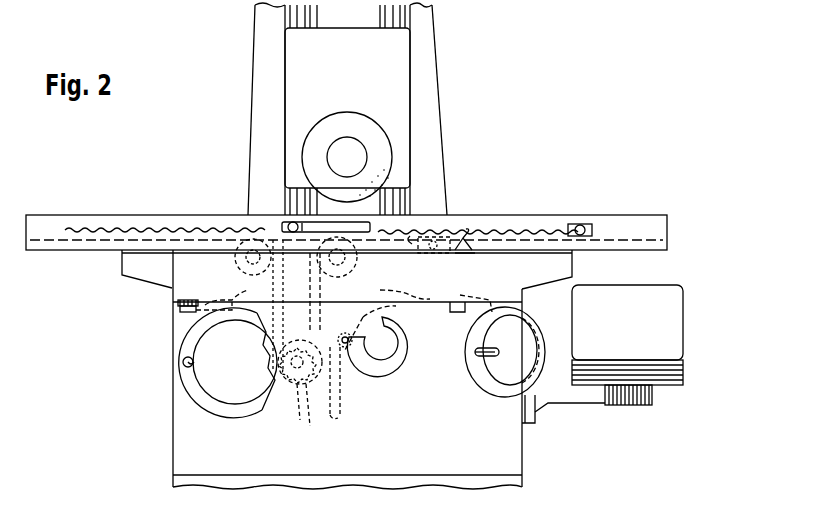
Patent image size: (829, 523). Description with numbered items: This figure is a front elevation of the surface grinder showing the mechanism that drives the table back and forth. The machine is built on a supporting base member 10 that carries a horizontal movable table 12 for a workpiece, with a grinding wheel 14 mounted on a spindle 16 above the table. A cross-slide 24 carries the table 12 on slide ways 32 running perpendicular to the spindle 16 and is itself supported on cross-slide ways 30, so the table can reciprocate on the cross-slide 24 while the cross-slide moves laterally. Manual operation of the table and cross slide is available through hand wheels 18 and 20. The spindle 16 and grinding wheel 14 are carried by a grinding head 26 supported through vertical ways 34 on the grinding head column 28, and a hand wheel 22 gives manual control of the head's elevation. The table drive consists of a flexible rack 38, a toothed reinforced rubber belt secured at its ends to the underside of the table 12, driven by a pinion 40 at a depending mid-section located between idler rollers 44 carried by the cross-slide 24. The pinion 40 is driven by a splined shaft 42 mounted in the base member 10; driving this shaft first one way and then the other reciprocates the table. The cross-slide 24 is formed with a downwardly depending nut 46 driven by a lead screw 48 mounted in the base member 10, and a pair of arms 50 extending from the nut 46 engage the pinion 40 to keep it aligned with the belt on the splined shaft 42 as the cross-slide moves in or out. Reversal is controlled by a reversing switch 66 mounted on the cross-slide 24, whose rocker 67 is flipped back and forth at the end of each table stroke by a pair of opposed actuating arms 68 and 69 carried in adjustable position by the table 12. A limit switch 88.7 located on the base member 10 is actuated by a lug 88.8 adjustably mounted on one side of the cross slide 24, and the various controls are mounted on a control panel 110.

The supporting base member 10 is at (447, 465).
The horizontal movable table 12 is at (47, 215).
The grinding wheel 14 is at (359, 136).
The spindle 16 is at (359, 166).
The hand wheel 18 is at (213, 407).
The hand wheel 20 is at (397, 355).
The hand wheel 22 is at (482, 375).
The cross-slide 24 is at (130, 268).
The grinding head 26 is at (358, 86).
The grinding head column 28 is at (443, 120).
The cross-slide ways 30 is at (344, 295).
The slide ways 32 is at (590, 247).
The vertical ways 34 is at (300, 12).
The flexible rack 38 is at (320, 291).
The pinion 40 is at (297, 405).
The splined shaft 42 is at (311, 425).
The idler rollers 44 is at (238, 265).
The nut 46 is at (396, 310).
The lead screw 48 is at (346, 380).
The arms 50 is at (336, 411).
The reversing switch 66 is at (443, 252).
The rocker 67 is at (475, 252).
The actuating arm 68 is at (370, 232).
The actuating arm 69 is at (548, 225).
The limit switch 88.7 is at (180, 310).
The lug 88.8 is at (178, 303).
The control panel 110 is at (640, 331).